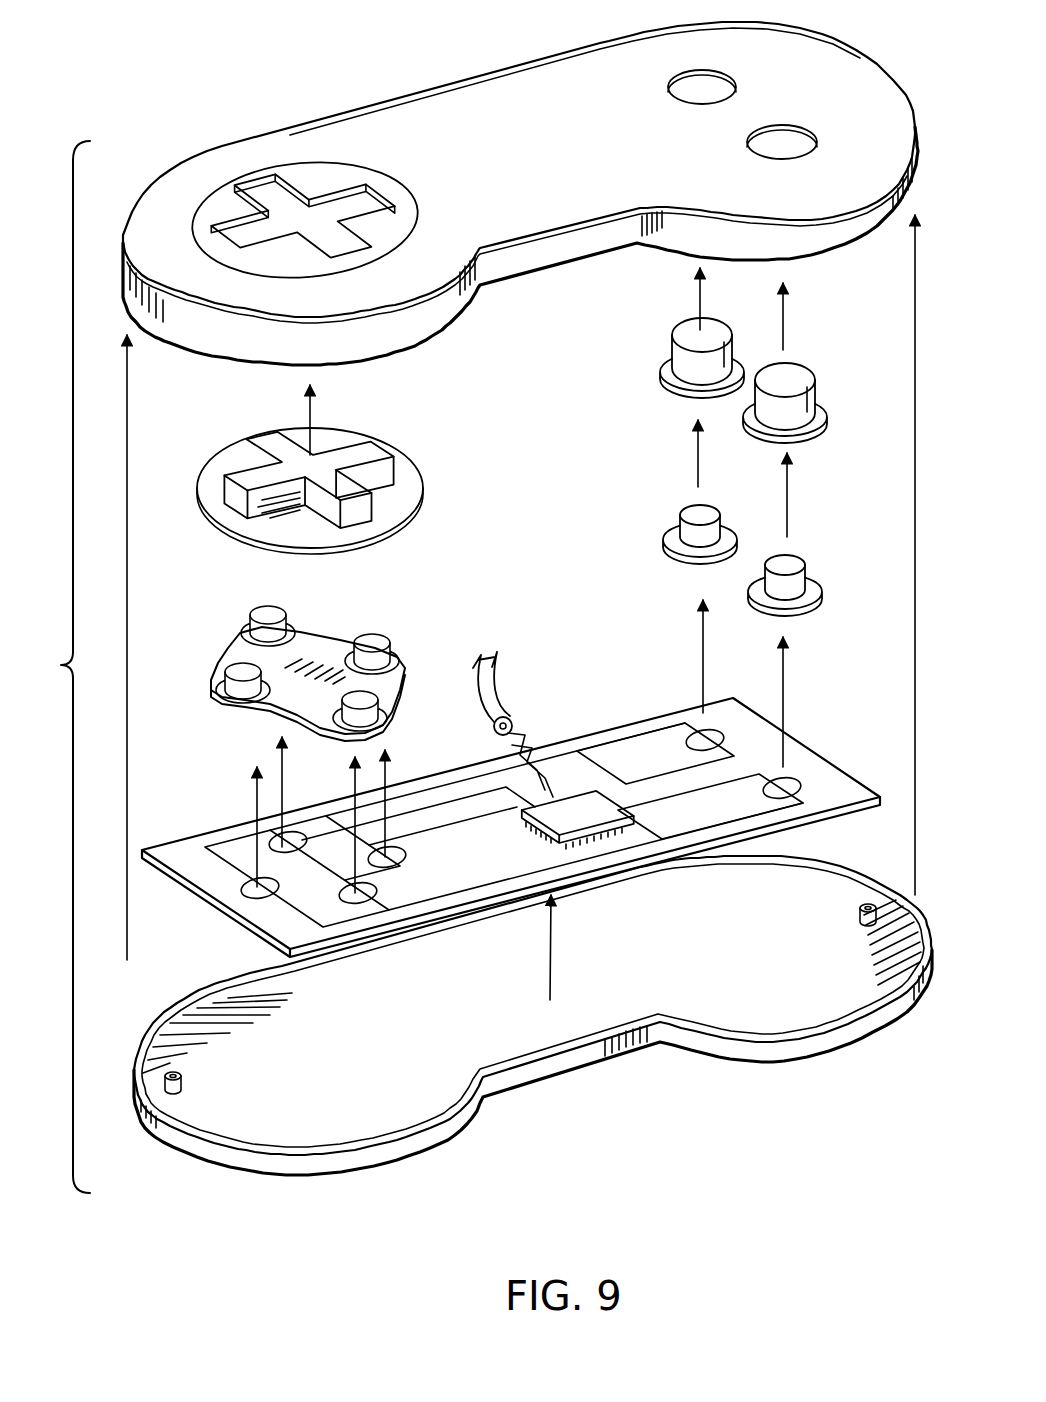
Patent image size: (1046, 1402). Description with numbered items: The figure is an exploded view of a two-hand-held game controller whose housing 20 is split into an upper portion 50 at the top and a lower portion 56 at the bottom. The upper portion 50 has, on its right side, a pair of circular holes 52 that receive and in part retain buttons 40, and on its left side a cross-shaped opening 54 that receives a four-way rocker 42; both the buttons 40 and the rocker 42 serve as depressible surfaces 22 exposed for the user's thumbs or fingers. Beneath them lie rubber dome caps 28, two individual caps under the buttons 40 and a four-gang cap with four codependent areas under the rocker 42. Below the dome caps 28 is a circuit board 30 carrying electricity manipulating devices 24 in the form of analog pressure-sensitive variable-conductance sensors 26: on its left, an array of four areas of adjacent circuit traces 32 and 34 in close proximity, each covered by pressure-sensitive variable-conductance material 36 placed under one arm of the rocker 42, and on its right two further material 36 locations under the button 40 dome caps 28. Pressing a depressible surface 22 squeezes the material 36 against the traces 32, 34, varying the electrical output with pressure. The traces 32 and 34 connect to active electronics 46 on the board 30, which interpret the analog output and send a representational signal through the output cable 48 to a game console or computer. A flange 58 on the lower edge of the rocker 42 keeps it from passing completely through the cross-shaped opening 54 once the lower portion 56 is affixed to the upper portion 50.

The housing 20 is at (527, 640).
The depressible surface 22 is at (524, 440).
The electricity manipulating device 24 is at (517, 809).
The analog pressure-sensitive variable-conductance sensor 26 is at (202, 690).
The rubber dome cap 28 is at (680, 517).
The circuit board 30 is at (677, 858).
The circuit trace 32 is at (240, 868).
The circuit trace 34 is at (477, 887).
The pressure-sensitive variable-conductance material 36 is at (780, 785).
The button 40 is at (685, 320).
The four-way rocker 42 is at (223, 463).
The active electronics 46 is at (568, 812).
The output cable 48 is at (500, 670).
The upper portion of housing 50 is at (520, 193).
The circular hole 52 is at (747, 147).
The cross-shaped opening 54 is at (367, 190).
The lower portion of housing 56 is at (797, 1062).
The flange 58 is at (208, 527).